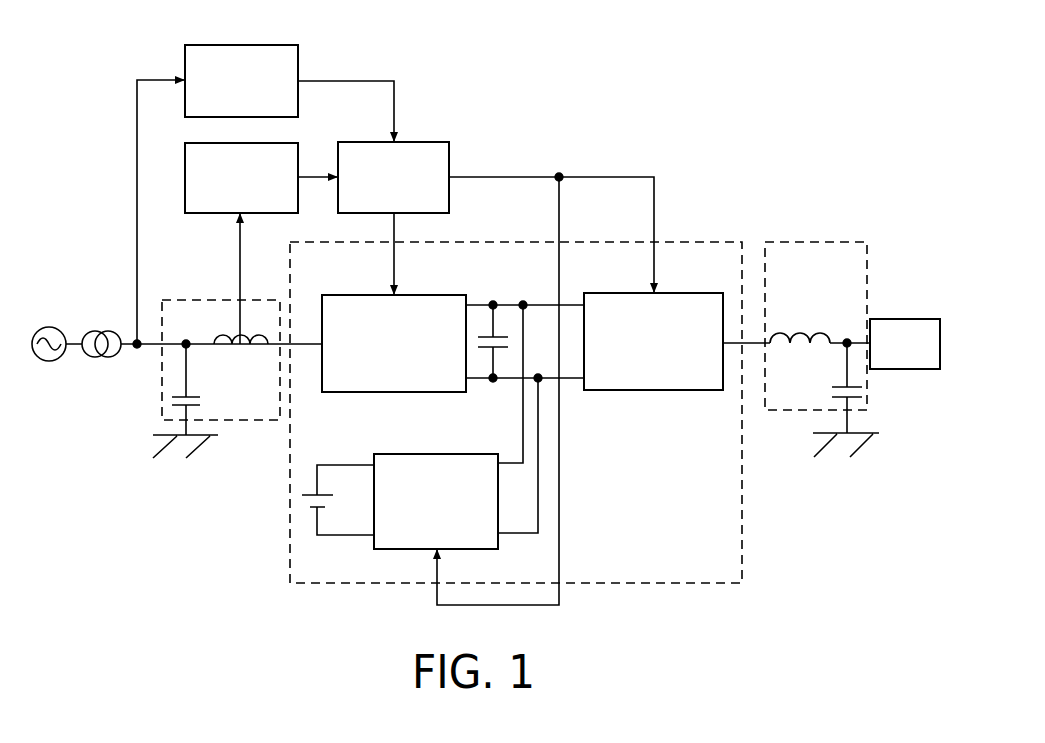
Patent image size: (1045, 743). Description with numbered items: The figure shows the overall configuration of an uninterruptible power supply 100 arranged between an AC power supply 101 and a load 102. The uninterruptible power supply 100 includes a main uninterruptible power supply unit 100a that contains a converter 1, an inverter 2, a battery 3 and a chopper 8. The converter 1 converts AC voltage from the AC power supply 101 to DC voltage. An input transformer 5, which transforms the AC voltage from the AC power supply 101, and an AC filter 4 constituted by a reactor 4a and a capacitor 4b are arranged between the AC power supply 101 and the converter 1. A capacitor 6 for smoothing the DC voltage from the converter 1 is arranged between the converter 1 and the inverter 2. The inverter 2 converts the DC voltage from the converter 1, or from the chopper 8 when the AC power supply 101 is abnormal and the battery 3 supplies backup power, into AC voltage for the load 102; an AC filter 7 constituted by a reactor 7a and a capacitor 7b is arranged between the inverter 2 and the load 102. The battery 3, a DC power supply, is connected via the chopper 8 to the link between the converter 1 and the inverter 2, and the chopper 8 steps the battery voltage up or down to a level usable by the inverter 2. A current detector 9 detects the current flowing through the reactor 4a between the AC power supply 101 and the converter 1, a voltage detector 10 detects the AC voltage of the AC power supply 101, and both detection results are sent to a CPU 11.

The uninterruptible power supply 100 is at (172, 37).
The main uninterruptible power supply unit 100a is at (740, 230).
The converter 1 is at (447, 294).
The inverter 2 is at (703, 293).
The battery 3 is at (312, 493).
The AC filter 4 is at (262, 300).
The reactor 4a is at (213, 341).
The capacitor 4b is at (191, 396).
The input transformer 5 is at (101, 331).
The capacitor 6 is at (508, 310).
The AC filter 7 is at (835, 241).
The reactor 7a is at (801, 332).
The capacitor 7b is at (836, 386).
The chopper 8 is at (479, 455).
The current detector 9 is at (184, 204).
The voltage detector 10 is at (184, 107).
The CPU 11 is at (448, 203).
The AC power supply 101 is at (49, 327).
The load 102 is at (916, 318).